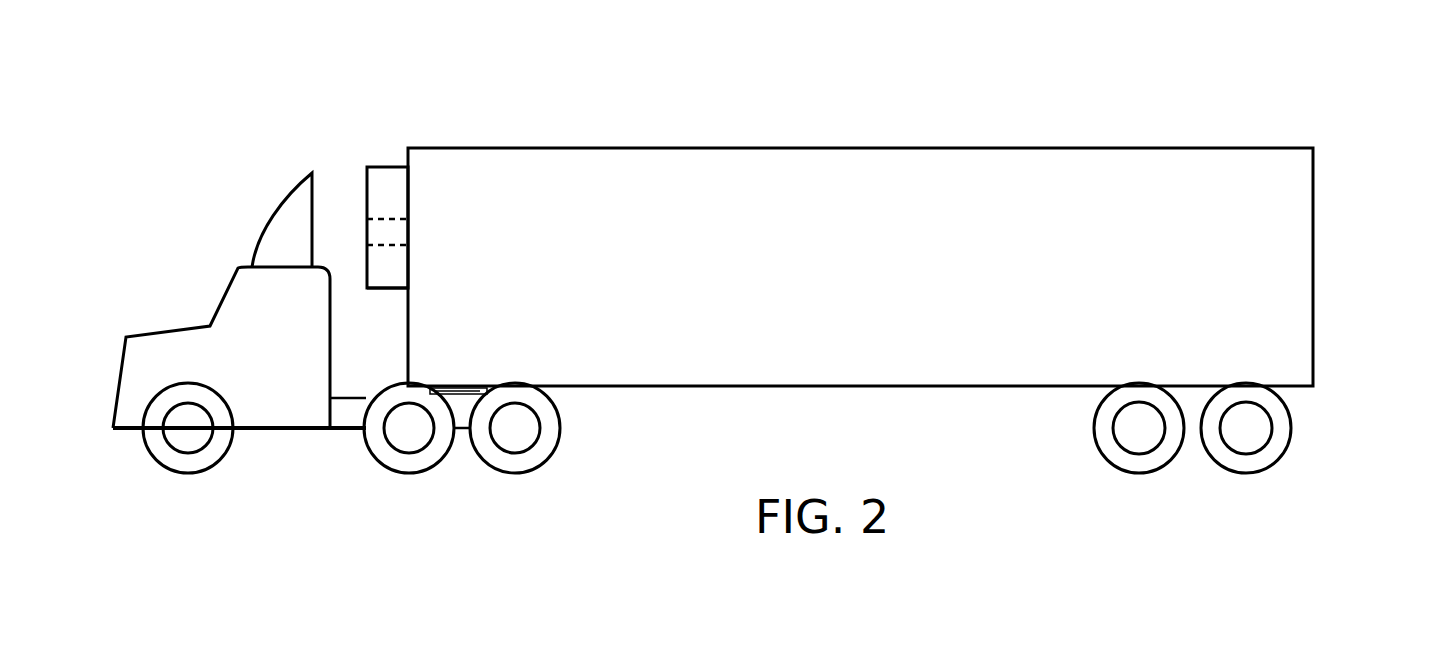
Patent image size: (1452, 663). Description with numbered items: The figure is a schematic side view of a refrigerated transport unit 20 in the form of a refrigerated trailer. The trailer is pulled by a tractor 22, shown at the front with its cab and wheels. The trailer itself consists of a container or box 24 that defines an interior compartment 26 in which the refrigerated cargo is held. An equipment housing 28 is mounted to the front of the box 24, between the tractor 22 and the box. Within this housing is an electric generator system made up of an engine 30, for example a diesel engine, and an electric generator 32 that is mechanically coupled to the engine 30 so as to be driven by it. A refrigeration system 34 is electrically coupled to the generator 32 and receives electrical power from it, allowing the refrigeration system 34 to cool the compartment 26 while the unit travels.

The refrigerated transport unit 20 is at (776, 251).
The tractor 22 is at (202, 228).
The container/box 24 is at (860, 251).
The interior/compartment 26 is at (764, 269).
The equipment housing 28 is at (336, 208).
The engine 30 is at (385, 267).
The electric generator 32 is at (383, 233).
The refrigeration system 34 is at (373, 188).